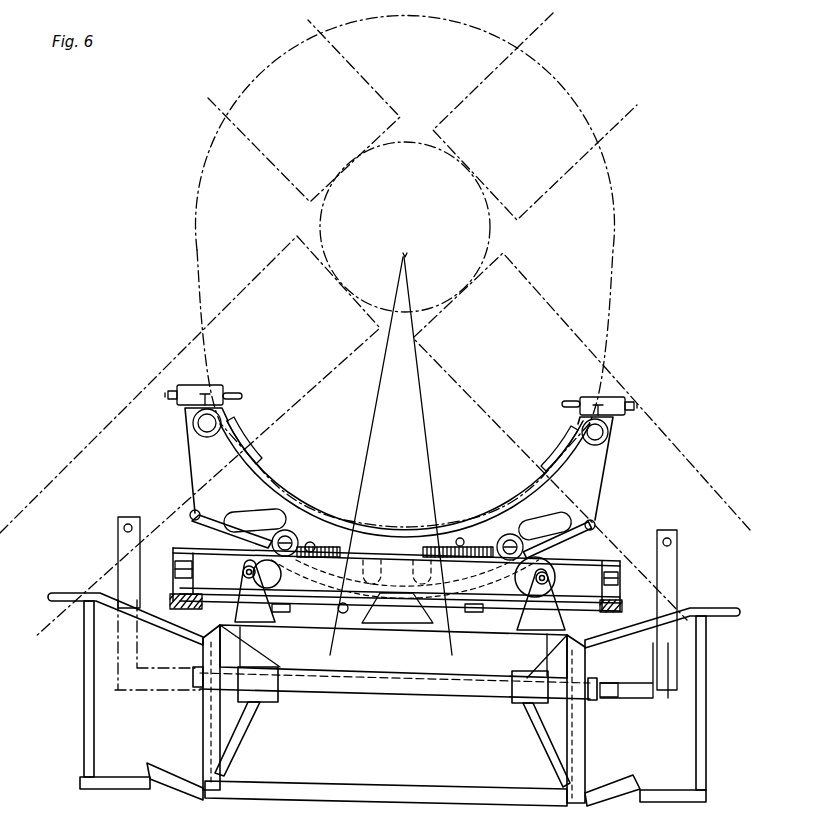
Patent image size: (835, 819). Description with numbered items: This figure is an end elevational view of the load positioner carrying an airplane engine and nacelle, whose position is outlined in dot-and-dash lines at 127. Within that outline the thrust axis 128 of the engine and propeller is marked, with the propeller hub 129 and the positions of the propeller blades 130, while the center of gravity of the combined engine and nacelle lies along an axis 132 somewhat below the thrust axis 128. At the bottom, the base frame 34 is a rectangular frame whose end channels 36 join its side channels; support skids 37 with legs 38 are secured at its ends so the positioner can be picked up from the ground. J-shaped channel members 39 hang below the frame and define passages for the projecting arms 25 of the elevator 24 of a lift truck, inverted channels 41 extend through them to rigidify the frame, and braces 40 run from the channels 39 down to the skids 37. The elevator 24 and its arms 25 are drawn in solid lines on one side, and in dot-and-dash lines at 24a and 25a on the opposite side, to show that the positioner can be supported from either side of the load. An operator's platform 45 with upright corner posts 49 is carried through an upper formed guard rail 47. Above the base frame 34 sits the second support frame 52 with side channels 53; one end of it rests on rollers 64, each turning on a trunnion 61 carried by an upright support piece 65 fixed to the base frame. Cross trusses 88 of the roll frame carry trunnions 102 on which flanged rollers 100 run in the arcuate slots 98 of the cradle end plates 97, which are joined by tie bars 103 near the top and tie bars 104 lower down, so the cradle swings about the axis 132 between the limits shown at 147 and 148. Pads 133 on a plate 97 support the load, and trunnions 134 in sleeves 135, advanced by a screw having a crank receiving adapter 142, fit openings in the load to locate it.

The elevator 24 is at (679, 567).
The elevator 24a is at (118, 540).
The projecting arms 25 is at (636, 700).
The projecting arms 25a is at (170, 690).
The base frame 34 is at (430, 690).
The end channels 36 is at (375, 652).
The support skids 37 is at (378, 793).
The legs 38 is at (203, 735).
The J-shaped channel members 39 is at (265, 705).
The braces 40 is at (240, 747).
The inverted channels 41 is at (602, 683).
The operator's platform 45 is at (640, 800).
The upper formed guard rail 47 is at (736, 610).
The upright corner posts 49 is at (84, 695).
The second support frame 52 is at (592, 556).
The side channels 53 is at (177, 580).
The trunnion 61 is at (248, 586).
The rollers 64 is at (283, 606).
The upright support piece 65 is at (225, 612).
The cross trusses 88 is at (476, 545).
The end plates 97 is at (200, 458).
The arcuate slots 98 is at (313, 542).
The flanged rollers 100 is at (275, 512).
The trunnions 102 is at (288, 536).
The tie bars 103 is at (193, 423).
The tie bars 104 is at (193, 513).
The nacelle outline 127 is at (615, 203).
The thrust axis 128 is at (405, 228).
The propeller hub 129 is at (420, 140).
The propeller blades 130 is at (240, 133).
The center of gravity axis 132 is at (406, 257).
The pads 133 is at (245, 432).
The trunnions 134 is at (242, 396).
The sleeves 135 is at (205, 388).
The crank receiving adapter 142 is at (170, 394).
The cradle position limit line 147 is at (368, 447).
The cradle position limit line 148 is at (430, 438).